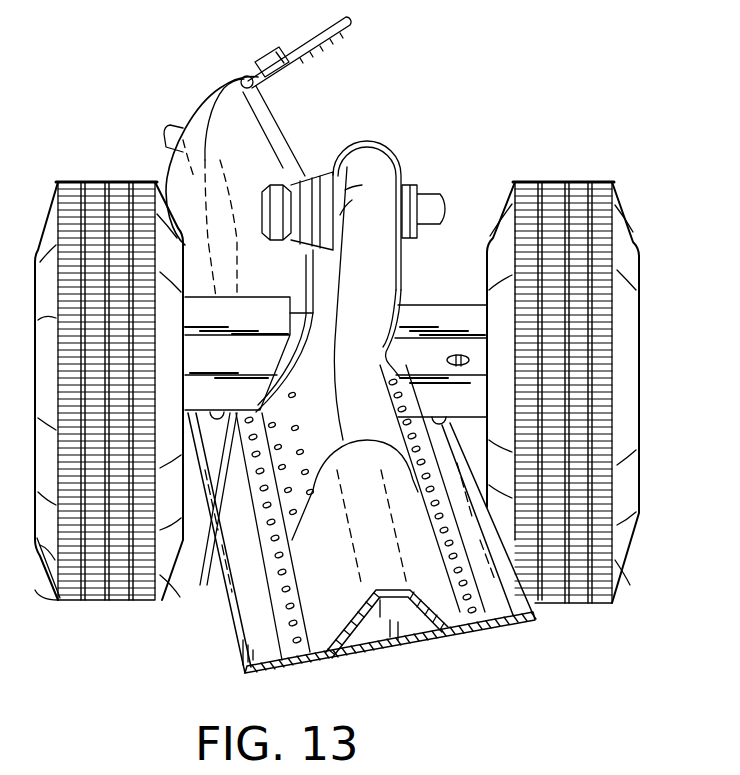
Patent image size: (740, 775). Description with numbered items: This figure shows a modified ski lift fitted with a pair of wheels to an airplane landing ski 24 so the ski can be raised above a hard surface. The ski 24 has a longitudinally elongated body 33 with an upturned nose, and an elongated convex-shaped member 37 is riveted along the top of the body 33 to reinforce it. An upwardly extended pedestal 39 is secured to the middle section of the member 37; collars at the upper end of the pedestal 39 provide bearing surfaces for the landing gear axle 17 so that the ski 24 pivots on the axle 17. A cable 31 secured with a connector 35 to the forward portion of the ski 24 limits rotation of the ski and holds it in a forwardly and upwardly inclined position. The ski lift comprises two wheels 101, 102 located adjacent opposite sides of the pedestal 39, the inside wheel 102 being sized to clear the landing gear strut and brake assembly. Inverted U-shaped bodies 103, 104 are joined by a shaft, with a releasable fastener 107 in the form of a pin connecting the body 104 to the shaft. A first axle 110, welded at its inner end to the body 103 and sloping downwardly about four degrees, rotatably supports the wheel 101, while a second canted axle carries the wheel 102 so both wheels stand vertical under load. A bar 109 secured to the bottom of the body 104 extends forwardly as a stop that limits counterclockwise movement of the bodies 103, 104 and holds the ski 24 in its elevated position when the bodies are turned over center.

The axle 17 is at (428, 200).
The airplane landing ski 24 is at (188, 107).
The cable 31 is at (328, 44).
The body 33 is at (378, 650).
The connector 35 is at (285, 62).
The convex-shaped member 37 is at (418, 622).
The pedestal 39 is at (373, 152).
The wheel 101 is at (42, 590).
The wheel 102 is at (627, 570).
The inverted U-shaped body 103 is at (260, 312).
The inverted U-shaped body 104 is at (413, 317).
The releasable fastener 107 is at (459, 354).
The bar 109 is at (592, 351).
The first axle 110 is at (207, 516).